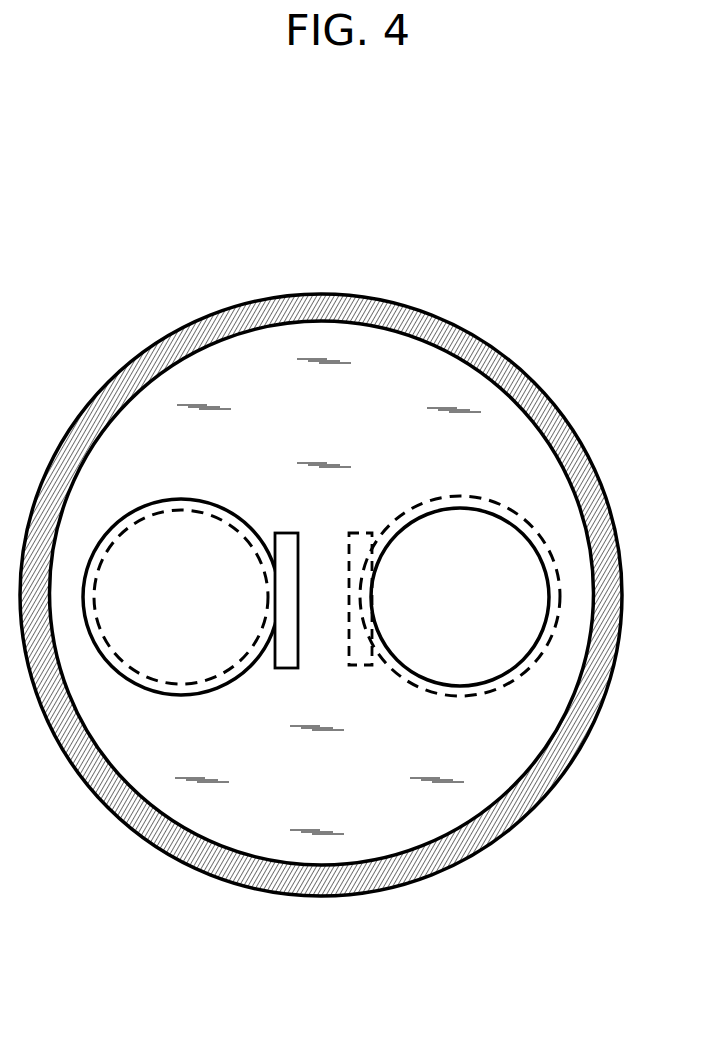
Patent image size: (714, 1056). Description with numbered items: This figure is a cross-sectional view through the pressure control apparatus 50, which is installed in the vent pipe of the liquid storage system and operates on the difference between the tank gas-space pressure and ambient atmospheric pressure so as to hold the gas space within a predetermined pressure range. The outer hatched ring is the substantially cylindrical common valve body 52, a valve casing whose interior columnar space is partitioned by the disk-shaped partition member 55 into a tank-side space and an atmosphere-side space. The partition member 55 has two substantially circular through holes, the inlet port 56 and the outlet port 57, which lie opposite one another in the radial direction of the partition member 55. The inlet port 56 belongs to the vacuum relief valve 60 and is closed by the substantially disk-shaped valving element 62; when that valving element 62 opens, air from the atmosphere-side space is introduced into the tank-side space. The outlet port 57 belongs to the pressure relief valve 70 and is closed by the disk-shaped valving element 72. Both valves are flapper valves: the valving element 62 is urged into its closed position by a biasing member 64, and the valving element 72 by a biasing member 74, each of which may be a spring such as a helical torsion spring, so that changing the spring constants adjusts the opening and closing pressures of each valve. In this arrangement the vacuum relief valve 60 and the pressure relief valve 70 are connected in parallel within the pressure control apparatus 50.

The pressure control apparatus 50 is at (512, 302).
The valve body 52 is at (119, 373).
The partition member 55 is at (331, 794).
The inlet port 56 is at (467, 509).
The outlet port 57 is at (171, 684).
The vacuum relief valve 60 is at (416, 492).
The valving element 62 is at (458, 698).
The biasing member 64 is at (350, 668).
The pressure relief valve 70 is at (219, 705).
The valving element 72 is at (200, 498).
The biasing member 74 is at (282, 541).